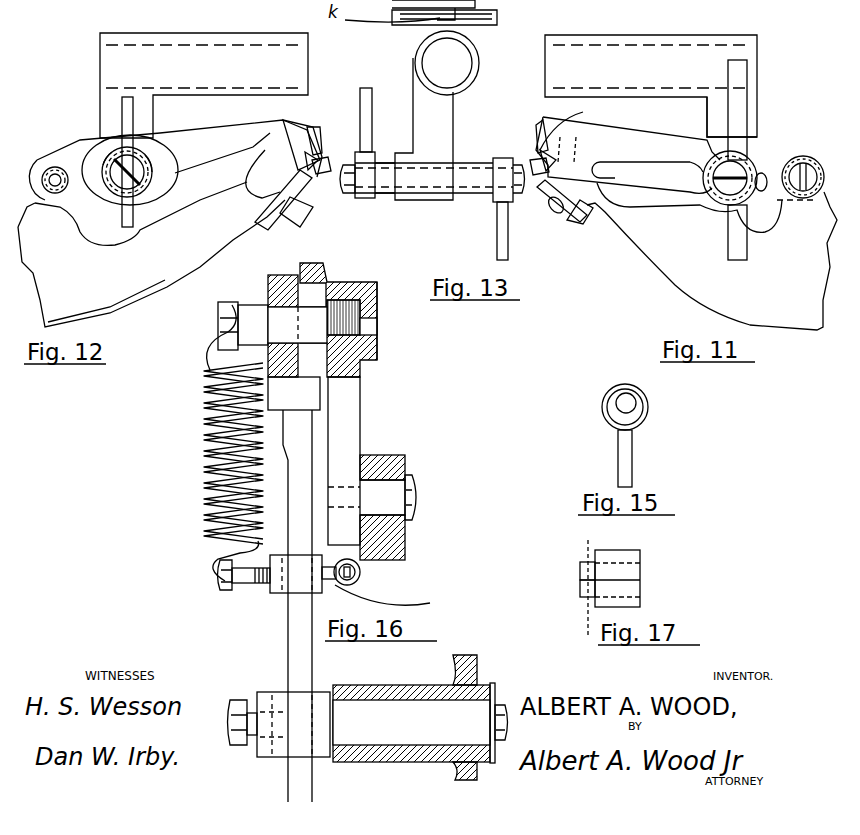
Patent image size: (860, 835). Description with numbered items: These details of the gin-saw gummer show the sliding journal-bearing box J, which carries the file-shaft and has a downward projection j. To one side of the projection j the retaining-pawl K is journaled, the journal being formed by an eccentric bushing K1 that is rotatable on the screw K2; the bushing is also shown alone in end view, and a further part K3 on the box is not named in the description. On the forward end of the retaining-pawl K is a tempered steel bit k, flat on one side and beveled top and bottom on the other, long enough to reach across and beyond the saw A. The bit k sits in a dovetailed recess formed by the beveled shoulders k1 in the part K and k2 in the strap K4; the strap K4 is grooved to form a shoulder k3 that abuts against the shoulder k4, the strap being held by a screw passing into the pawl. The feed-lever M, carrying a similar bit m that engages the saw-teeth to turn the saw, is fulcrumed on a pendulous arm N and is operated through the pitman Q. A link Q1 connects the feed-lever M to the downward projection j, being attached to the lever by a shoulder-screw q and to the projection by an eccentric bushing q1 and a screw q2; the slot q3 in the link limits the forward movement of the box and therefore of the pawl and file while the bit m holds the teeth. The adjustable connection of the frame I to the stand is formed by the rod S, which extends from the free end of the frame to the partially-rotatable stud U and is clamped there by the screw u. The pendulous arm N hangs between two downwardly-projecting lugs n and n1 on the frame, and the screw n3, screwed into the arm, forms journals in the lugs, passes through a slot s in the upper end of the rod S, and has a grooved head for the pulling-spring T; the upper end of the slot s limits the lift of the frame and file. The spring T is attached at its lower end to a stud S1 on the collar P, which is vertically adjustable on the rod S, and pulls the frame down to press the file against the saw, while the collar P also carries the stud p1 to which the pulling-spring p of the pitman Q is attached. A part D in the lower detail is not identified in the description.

In FIG. 12, the sliding journal-bearing box J is at (204, 85).
In FIG. 13, the sliding journal-bearing box J is at (418, 55).
In FIG. 11, the sliding journal-bearing box J is at (651, 86).
In FIG. 12, the downward projection j is at (118, 162).
In FIG. 13, the downward projection j is at (424, 129).
In FIG. 11, the downward projection j is at (705, 110).
In FIG. 12, the retaining-pawl K is at (210, 150).
In FIG. 13, the retaining-pawl K is at (365, 143).
In FIG. 11, the retaining-pawl K is at (662, 153).
In FIG. 17, the retaining-pawl K is at (660, 540).
In FIG. 13, the eccentric bushing K1 is at (478, 197).
In FIG. 11, the eccentric bushing K1 is at (748, 172).
In FIG. 15, the eccentric bushing K1 is at (672, 412).
In FIG. 13, the screw K2 is at (516, 205).
In FIG. 11, the screw K2 is at (738, 160).
In FIG. 11, the lever arm K3 is at (740, 70).
In FIG. 11, the strap K4 is at (688, 186).
In FIG. 12, the bit k is at (318, 147).
In FIG. 11, the bit k is at (538, 140).
In FIG. 17, the bit k is at (623, 589).
In FIG. 12, the beveled shoulder k1 is at (318, 126).
In FIG. 11, the beveled shoulder k1 is at (545, 127).
In FIG. 12, the beveled shoulder k2 is at (326, 168).
In FIG. 11, the beveled shoulder k2 is at (532, 165).
In FIG. 11, the shoulder k3 is at (565, 215).
In FIG. 11, the shoulder k4 is at (583, 112).
In FIG. 11, the pitman Q is at (764, 187).
In FIG. 12, the link Q1 is at (100, 152).
In FIG. 12, the shoulder-screw q is at (49, 170).
In FIG. 11, the shoulder-screw q is at (803, 200).
In FIG. 12, the eccentric bushing q1 is at (138, 165).
In FIG. 13, the eccentric bushing q1 is at (390, 195).
In FIG. 12, the screw q2 is at (150, 172).
In FIG. 13, the screw q2 is at (349, 194).
In FIG. 12, the slot q3 is at (152, 172).
In FIG. 12, the bit m is at (300, 160).
In FIG. 12, the feed-lever M is at (151, 254).
In FIG. 11, the feed-lever M is at (712, 256).
In FIG. 16, the feed-lever M is at (405, 462).
In FIG. 16, the frame I is at (377, 292).
In FIG. 16, the downwardly-projecting lug n is at (330, 356).
In FIG. 16, the downwardly-projecting lug n1 is at (378, 350).
In FIG. 16, the screw n3 is at (218, 316).
In FIG. 16, the slot s is at (268, 300).
In FIG. 16, the pendulous arm N is at (356, 461).
In FIG. 16, the pulling-spring T is at (215, 443).
In FIG. 16, the rod S is at (294, 589).
In FIG. 16, the screw or stud S1 is at (220, 592).
In FIG. 16, the vertically-adjustable collar P is at (272, 592).
In FIG. 16, the pulling-spring p is at (361, 583).
In FIG. 16, the stud p1 is at (397, 599).
In FIG. 16, the partially-rotatable stud U is at (270, 700).
In FIG. 16, the screw u is at (240, 745).
In FIG. 16, the sleeve D is at (420, 717).
In FIG. 17, the saw A is at (588, 612).